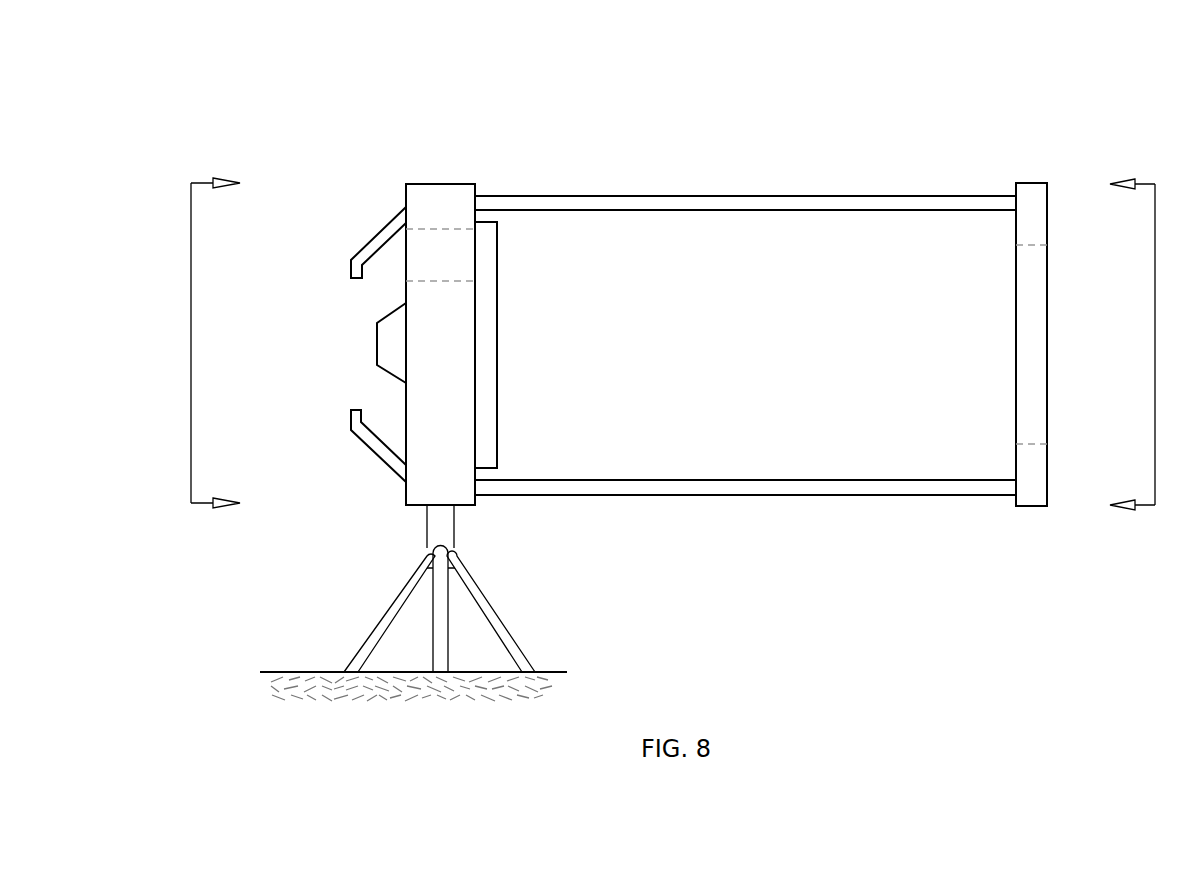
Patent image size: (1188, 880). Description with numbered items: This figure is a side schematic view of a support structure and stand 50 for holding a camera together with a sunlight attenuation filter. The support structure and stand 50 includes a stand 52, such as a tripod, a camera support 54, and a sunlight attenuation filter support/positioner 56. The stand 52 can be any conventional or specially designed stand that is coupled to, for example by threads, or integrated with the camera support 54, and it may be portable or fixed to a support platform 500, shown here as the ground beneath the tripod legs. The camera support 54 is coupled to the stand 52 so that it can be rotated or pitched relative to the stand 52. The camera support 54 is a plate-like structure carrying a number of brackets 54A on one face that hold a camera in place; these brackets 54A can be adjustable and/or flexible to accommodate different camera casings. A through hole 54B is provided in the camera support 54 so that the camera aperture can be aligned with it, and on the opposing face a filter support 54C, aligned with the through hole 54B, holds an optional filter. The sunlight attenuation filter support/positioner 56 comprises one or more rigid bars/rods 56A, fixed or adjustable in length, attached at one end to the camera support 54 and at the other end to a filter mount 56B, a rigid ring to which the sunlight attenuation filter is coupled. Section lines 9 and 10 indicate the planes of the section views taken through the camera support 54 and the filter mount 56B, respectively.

The support structure and stand 50 is at (350, 92).
The stand 52 is at (432, 528).
The camera support 54 is at (434, 170).
The brackets 54A is at (355, 409).
The through hole 54B is at (438, 228).
The filter support 54C is at (497, 428).
The sunlight attenuation filter support/positioner 56 is at (1047, 156).
The bars/rods 56A is at (720, 211).
The filter mount 56B is at (1036, 498).
The support platform 500 is at (550, 672).
The section line 9- 9 is at (227, 345).
The section line 10- 10 is at (1115, 345).